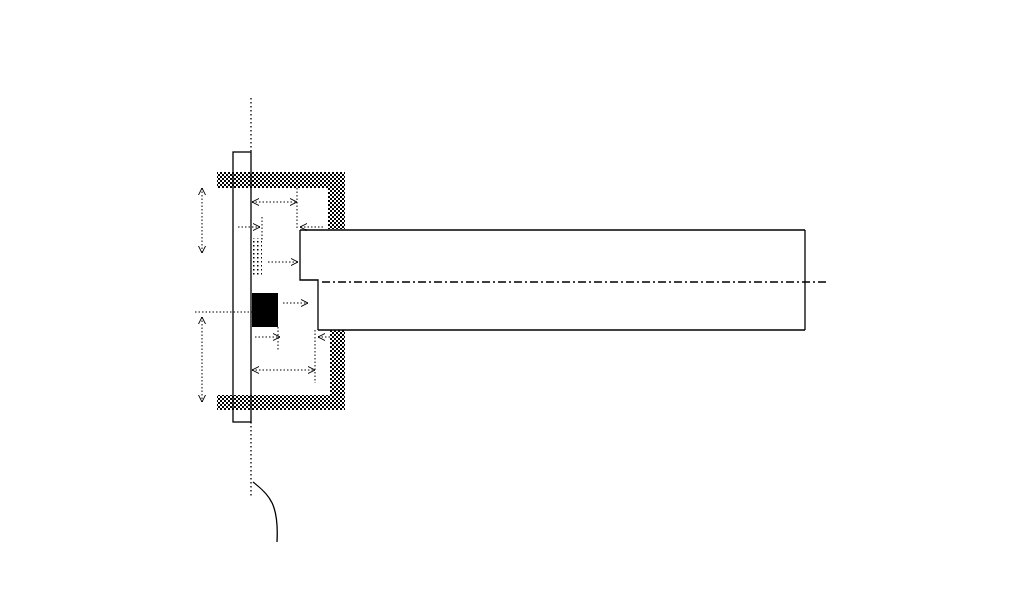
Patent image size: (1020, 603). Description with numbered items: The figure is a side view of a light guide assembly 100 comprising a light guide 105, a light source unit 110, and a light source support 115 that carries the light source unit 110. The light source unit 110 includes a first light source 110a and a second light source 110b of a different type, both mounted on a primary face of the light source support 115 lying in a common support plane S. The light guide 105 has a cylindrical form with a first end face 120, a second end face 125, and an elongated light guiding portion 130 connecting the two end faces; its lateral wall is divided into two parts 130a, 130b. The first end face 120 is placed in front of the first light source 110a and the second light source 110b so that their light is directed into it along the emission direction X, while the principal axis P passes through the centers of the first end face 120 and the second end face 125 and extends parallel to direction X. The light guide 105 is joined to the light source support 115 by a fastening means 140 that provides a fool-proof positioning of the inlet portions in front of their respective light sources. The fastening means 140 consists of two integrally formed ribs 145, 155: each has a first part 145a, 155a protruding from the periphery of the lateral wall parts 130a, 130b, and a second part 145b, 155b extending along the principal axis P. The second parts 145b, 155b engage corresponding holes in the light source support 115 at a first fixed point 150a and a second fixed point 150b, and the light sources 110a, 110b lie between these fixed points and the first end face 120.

The light guide assembly 100 is at (841, 125).
The light guide 105 is at (707, 228).
The light source unit 110 is at (113, 258).
The first light source 110a is at (252, 250).
The second light source 110b is at (250, 318).
The light source support 115 is at (236, 151).
The first end face 120 is at (298, 280).
The second end face 125 is at (806, 250).
The light guiding portion 130 is at (587, 250).
The lateral wall part 130a is at (523, 230).
The lateral wall part 130b is at (503, 332).
The fastening means 140 is at (345, 347).
The rib 145 is at (408, 75).
The first part of rib 145a is at (340, 207).
The second part of rib 145b is at (290, 172).
The first fixed point 150a is at (237, 172).
The second fixed point 150b is at (240, 420).
The rib 155 is at (390, 508).
The first part of rib 155a is at (345, 377).
The second part of rib 155b is at (298, 410).